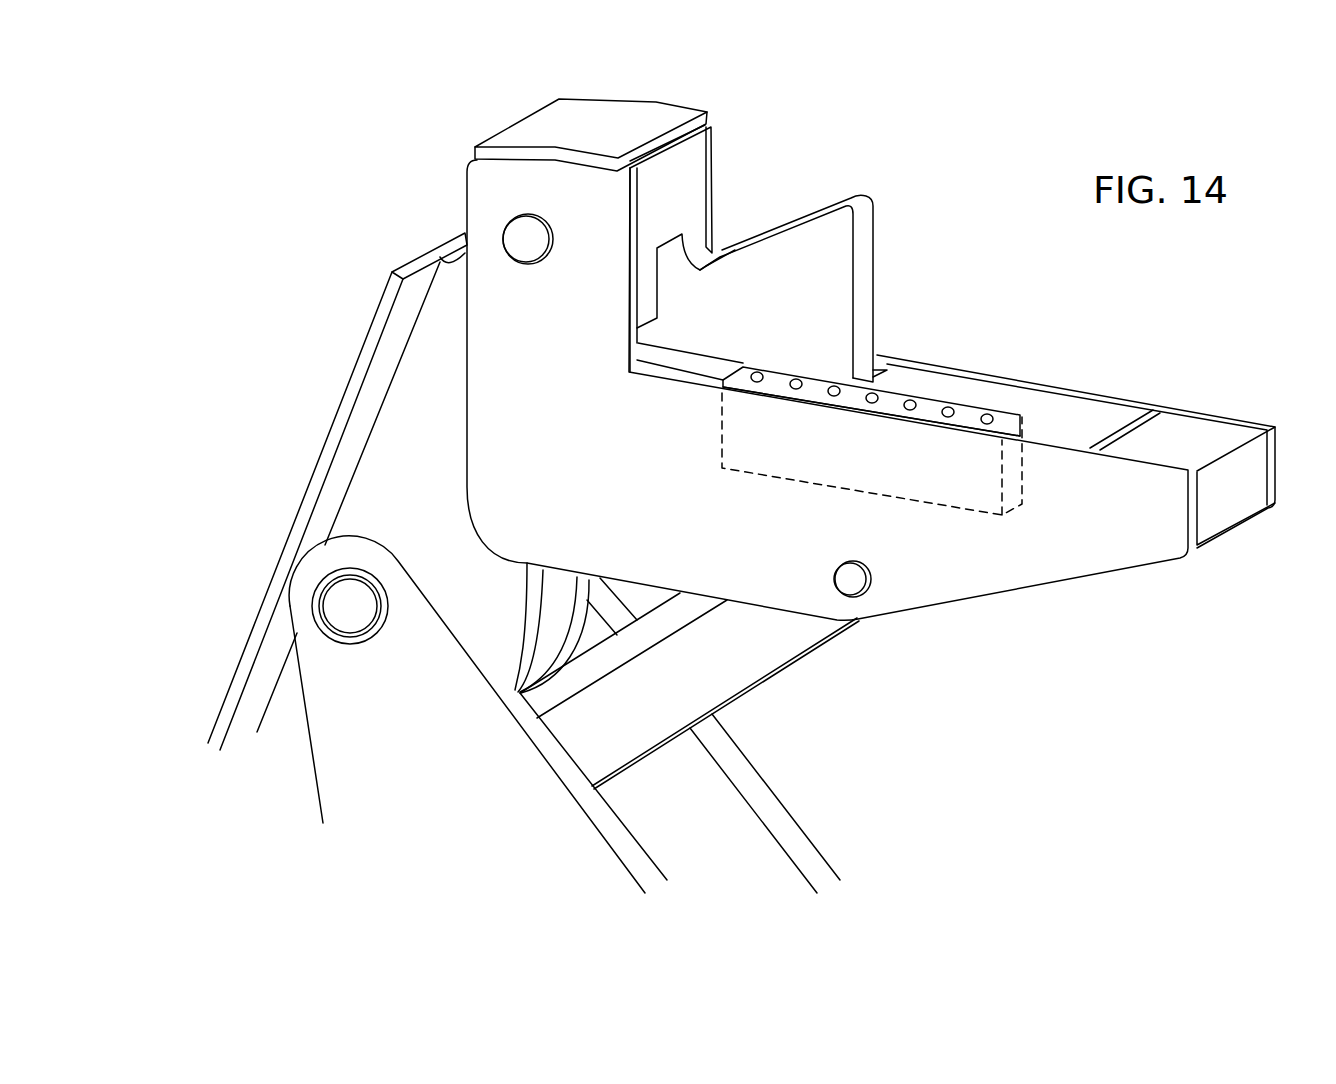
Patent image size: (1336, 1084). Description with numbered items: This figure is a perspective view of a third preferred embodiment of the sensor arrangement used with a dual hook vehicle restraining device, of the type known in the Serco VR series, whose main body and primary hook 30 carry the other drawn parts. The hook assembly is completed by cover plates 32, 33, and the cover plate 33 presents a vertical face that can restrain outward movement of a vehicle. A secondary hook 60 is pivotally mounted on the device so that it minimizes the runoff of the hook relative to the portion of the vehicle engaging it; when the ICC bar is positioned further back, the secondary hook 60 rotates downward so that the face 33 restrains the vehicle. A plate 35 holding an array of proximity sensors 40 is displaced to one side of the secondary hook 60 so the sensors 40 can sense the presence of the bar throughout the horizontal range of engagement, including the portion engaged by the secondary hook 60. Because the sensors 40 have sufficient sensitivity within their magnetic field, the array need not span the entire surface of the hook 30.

The clamp body 30 is at (1100, 558).
The cover plate 32 is at (674, 109).
The cover plate 33 is at (694, 170).
The plate 35 is at (1000, 418).
The proximity sensors 40 is at (721, 381).
The secondary hook 60 is at (866, 239).